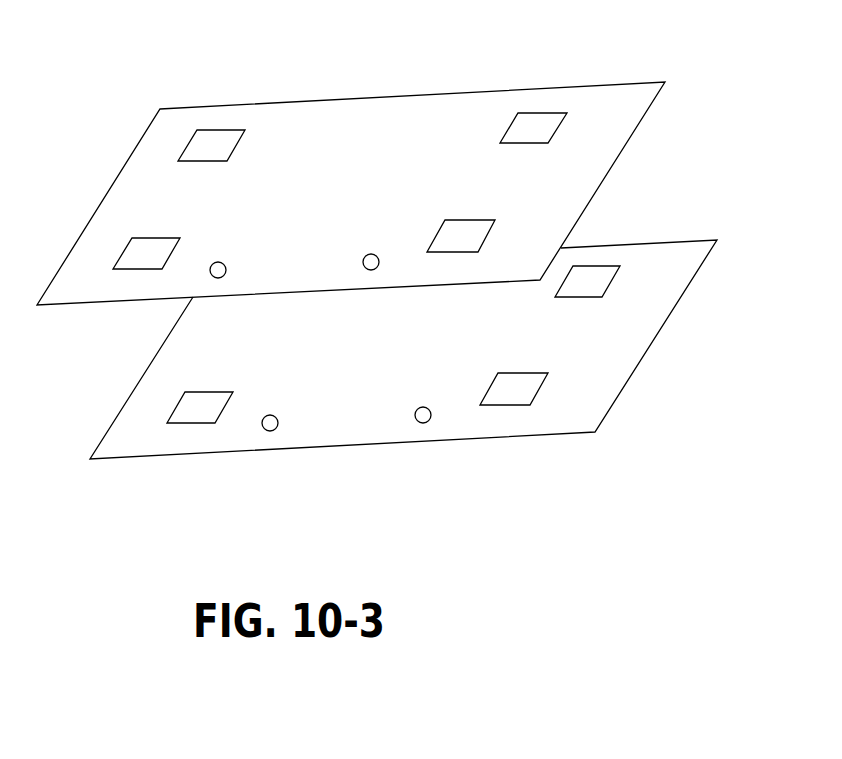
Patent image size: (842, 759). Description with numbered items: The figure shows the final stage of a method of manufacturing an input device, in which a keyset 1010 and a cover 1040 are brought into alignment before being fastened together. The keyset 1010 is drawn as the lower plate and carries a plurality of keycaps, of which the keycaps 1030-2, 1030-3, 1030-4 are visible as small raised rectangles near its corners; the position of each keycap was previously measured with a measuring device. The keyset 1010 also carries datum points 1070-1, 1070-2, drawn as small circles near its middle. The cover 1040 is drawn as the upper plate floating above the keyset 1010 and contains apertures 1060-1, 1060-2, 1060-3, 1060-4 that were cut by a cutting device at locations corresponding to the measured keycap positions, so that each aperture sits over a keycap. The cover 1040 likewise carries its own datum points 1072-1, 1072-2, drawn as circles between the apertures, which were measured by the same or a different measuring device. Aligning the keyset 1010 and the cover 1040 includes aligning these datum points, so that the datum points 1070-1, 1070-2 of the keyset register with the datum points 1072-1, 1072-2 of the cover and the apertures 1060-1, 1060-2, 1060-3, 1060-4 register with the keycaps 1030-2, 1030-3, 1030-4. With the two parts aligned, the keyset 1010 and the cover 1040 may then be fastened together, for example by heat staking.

The cover 1040 is at (672, 80).
The keyset 1010 is at (595, 432).
The aperture 1060-1 is at (215, 130).
The aperture 1060-2 is at (533, 113).
The aperture 1060-3 is at (158, 238).
The aperture 1060-4 is at (472, 220).
The datum point 1072-1 is at (218, 262).
The datum point 1072-2 is at (371, 254).
The keycap 1030-2 is at (573, 297).
The keycap 1030-3 is at (210, 392).
The keycap 1030-4 is at (523, 373).
The datum point 1070-1 is at (271, 415).
The datum point 1070-2 is at (423, 407).